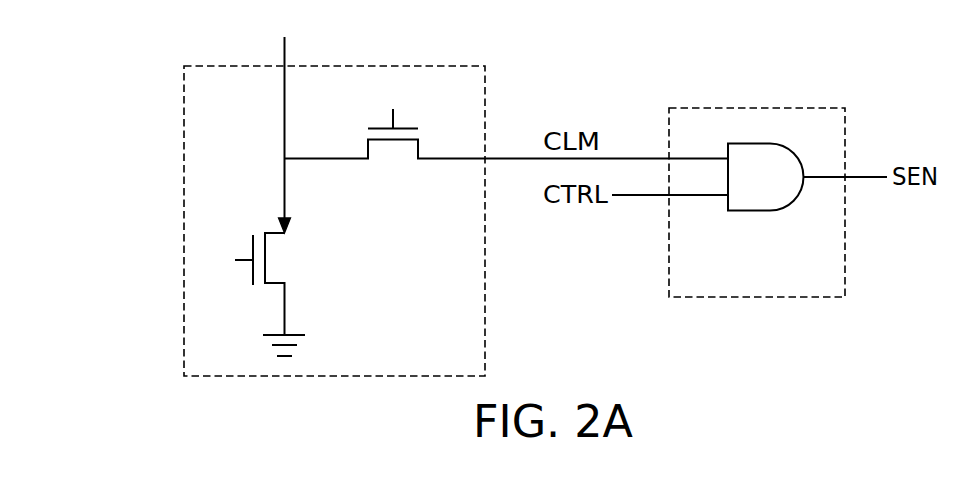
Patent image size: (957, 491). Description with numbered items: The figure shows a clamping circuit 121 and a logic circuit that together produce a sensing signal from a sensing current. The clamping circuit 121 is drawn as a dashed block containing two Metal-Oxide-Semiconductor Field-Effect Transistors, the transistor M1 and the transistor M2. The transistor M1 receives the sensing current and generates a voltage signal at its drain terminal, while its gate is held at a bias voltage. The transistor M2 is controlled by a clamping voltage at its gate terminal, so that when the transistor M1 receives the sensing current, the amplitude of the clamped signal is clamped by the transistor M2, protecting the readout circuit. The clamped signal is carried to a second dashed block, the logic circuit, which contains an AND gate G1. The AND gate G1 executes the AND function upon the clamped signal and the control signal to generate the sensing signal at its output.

The clamping circuit 121 is at (292, 206).
The AND gate G1 is at (746, 211).
The transistor M1 is at (261, 284).
The transistor M2 is at (385, 136).